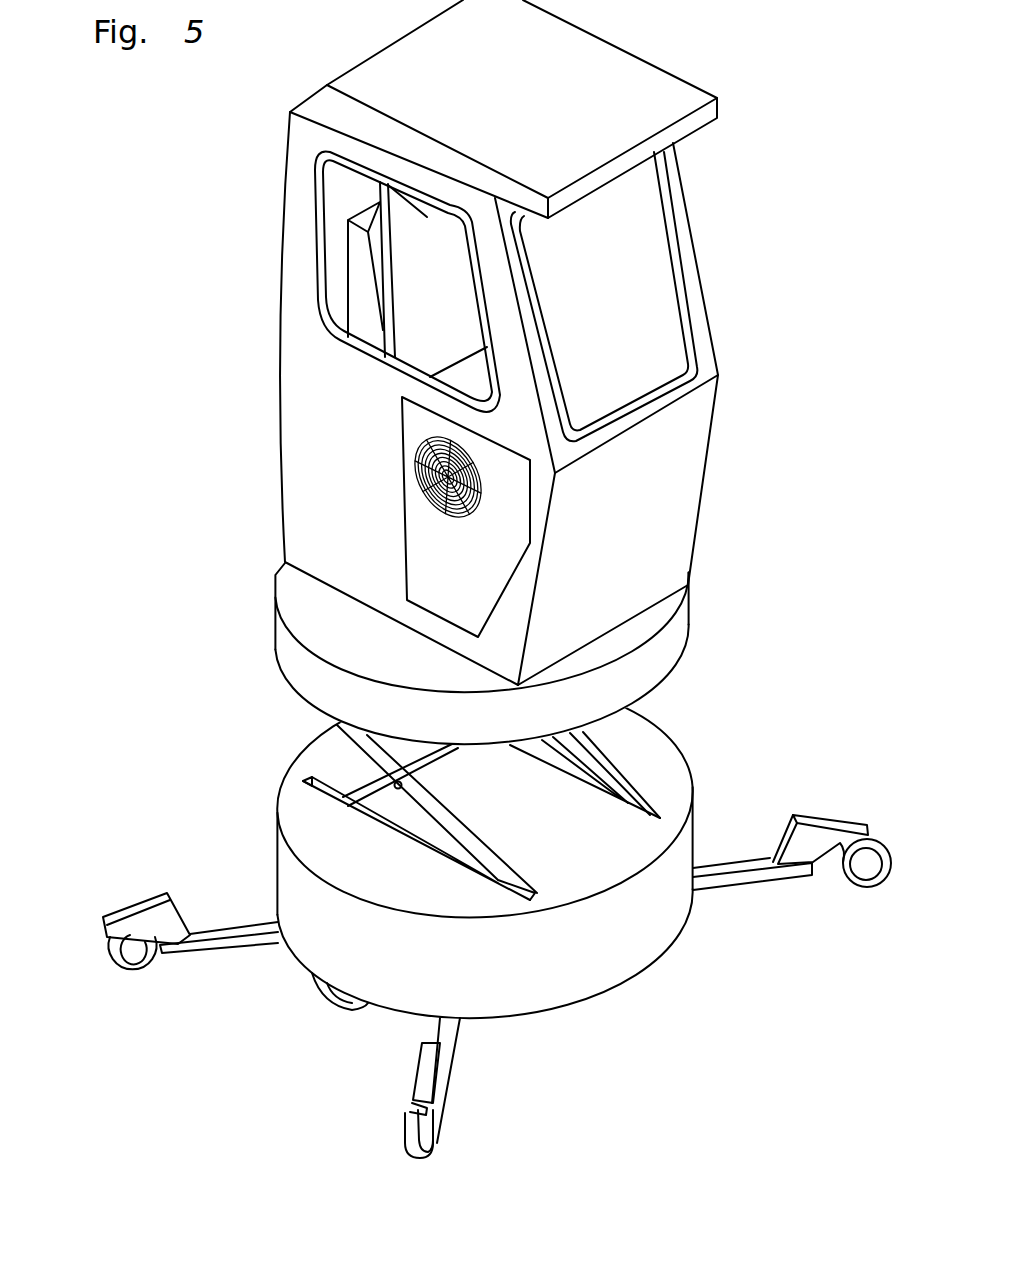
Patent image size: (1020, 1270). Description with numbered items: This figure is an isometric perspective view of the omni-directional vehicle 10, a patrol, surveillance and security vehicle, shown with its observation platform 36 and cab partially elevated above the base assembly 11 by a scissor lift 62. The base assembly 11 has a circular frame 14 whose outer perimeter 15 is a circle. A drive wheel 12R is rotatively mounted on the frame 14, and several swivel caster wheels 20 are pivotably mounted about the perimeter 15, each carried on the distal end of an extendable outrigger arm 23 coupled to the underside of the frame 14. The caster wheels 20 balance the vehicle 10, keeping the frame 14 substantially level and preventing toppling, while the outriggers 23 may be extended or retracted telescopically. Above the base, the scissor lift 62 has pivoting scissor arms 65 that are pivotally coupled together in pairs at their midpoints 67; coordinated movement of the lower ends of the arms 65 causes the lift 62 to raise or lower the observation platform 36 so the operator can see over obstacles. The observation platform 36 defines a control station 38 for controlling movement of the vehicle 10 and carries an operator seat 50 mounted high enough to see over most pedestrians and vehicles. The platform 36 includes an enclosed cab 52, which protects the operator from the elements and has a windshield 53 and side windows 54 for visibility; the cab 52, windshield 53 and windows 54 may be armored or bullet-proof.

The omni-directional vehicle 10 is at (148, 488).
The base assembly 11 is at (660, 930).
The drive wheel 12R is at (345, 1015).
The frame 14 is at (661, 975).
The outer perimeter 15 is at (697, 823).
The swivel caster wheel 20 is at (866, 893).
The extendable outrigger arm 23 is at (740, 886).
The observation platform 36 is at (280, 637).
The control station 38 is at (632, 299).
The seat 50 is at (355, 250).
The enclosed cab 52 is at (712, 458).
The windshield 53 is at (668, 218).
The side window 54 is at (315, 300).
The scissor lift 62 is at (590, 760).
The scissor arm 65 is at (442, 778).
The midpoint pivot 67 is at (385, 782).